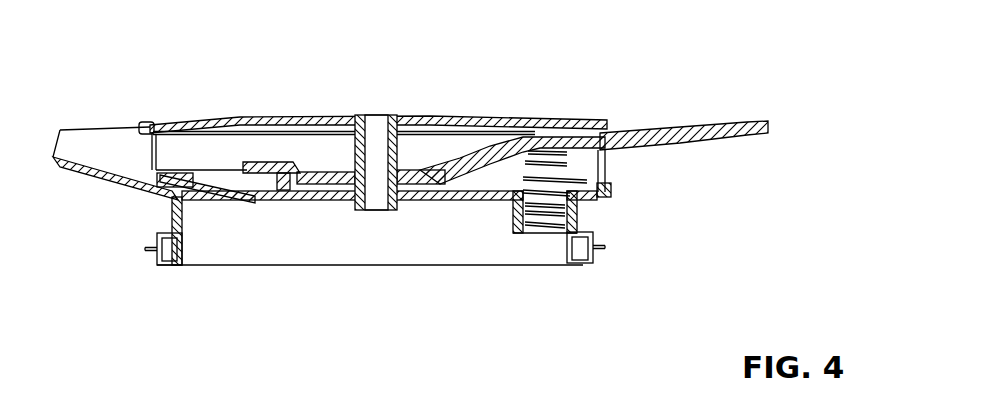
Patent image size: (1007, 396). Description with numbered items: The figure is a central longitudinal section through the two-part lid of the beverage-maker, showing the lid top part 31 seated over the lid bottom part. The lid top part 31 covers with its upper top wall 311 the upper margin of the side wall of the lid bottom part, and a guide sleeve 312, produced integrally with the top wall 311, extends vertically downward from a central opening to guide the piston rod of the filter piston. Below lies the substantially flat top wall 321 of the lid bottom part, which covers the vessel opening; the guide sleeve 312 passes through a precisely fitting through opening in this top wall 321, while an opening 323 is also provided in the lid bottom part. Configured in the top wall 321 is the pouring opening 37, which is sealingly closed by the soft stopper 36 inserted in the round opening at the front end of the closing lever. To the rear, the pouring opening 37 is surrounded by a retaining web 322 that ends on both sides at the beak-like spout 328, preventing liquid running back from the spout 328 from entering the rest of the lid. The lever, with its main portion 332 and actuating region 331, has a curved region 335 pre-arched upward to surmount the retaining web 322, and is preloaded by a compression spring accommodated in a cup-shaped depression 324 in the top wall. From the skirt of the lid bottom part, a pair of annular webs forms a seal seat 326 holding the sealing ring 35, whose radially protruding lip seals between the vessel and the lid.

The lid top part 31 is at (465, 164).
The top wall 311 is at (327, 115).
The guide sleeve 312 is at (415, 132).
The top wall 321 is at (478, 196).
The retaining web 322 is at (279, 192).
The opening 323 is at (399, 203).
The depression 324 is at (547, 233).
The seal seat 326 is at (582, 263).
The spout 328 is at (60, 178).
The actuating region 331 is at (738, 122).
The main portion 332 is at (455, 163).
The curved region 335 is at (313, 192).
The sealing ring 35 is at (162, 248).
The stopper 36 is at (214, 172).
The pouring opening 37 is at (217, 222).